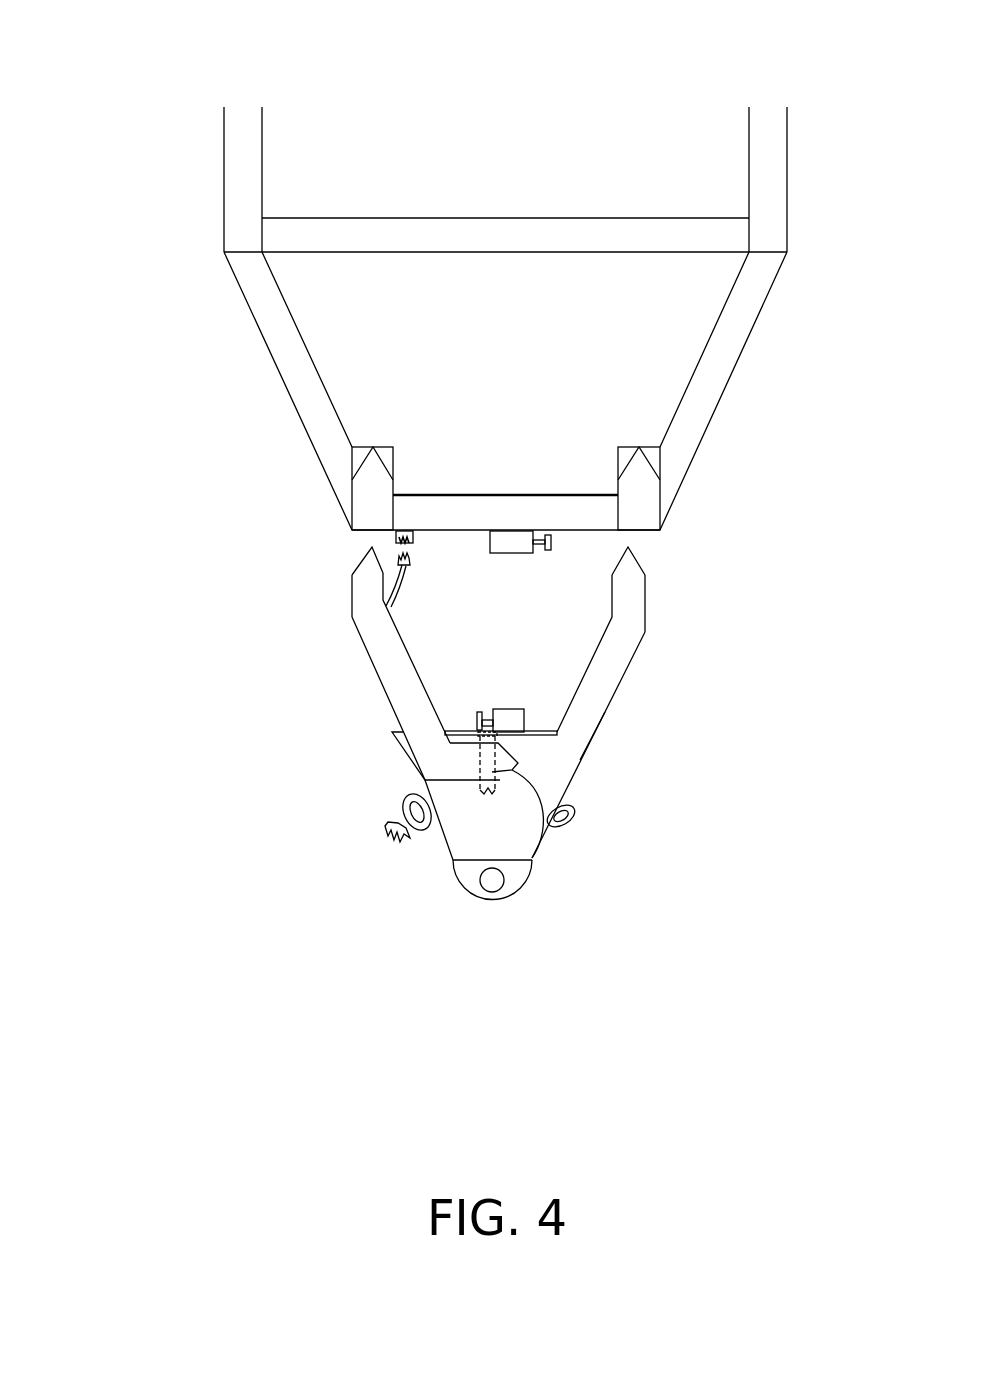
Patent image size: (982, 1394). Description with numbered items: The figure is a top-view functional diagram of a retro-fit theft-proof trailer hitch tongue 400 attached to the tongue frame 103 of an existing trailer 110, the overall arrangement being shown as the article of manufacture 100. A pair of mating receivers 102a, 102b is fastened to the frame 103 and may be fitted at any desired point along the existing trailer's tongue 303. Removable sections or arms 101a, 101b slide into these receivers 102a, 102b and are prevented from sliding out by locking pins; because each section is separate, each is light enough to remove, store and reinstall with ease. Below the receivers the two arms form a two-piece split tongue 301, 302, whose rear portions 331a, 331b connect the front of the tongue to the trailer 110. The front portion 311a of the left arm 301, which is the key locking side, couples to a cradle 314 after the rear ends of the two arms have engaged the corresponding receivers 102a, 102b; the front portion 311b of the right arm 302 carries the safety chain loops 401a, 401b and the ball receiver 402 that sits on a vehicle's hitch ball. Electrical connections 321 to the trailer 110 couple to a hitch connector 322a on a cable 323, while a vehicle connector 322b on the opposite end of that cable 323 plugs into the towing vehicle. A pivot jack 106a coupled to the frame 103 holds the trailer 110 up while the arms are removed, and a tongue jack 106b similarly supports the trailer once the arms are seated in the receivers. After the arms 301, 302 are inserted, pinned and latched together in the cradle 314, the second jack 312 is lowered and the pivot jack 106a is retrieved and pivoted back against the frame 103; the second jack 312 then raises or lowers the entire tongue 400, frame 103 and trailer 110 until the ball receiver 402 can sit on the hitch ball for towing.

The apparatus 100 is at (242, 56).
The frame 103 is at (262, 135).
The trailer 110 is at (525, 218).
The tongue 303 is at (292, 313).
The mating receiver 102a is at (373, 447).
The mating receiver 102b is at (639, 447).
The pivot jack 106a is at (516, 542).
The tongue jack 106b is at (524, 718).
The electrical connections 321 is at (396, 535).
The hitch connector 322a is at (411, 557).
The vehicle connector 322b is at (385, 830).
The cable 323 is at (418, 792).
The theft-proof trailer hitch tongue 400 is at (205, 558).
The removable section or arm 101a is at (360, 563).
The removable section or arm 101b is at (637, 553).
The rear portion 331a is at (352, 601).
The rear portion 331b is at (645, 596).
The left arm 301 is at (393, 667).
The right arm 302 is at (639, 640).
The second jack 312 is at (503, 709).
The front portion 311a is at (517, 755).
The front portion 311b is at (575, 777).
The cradle 314 is at (542, 838).
The safety chain loop 401a is at (418, 830).
The safety chain loop 401b is at (575, 815).
The ball receiver 402 is at (491, 884).